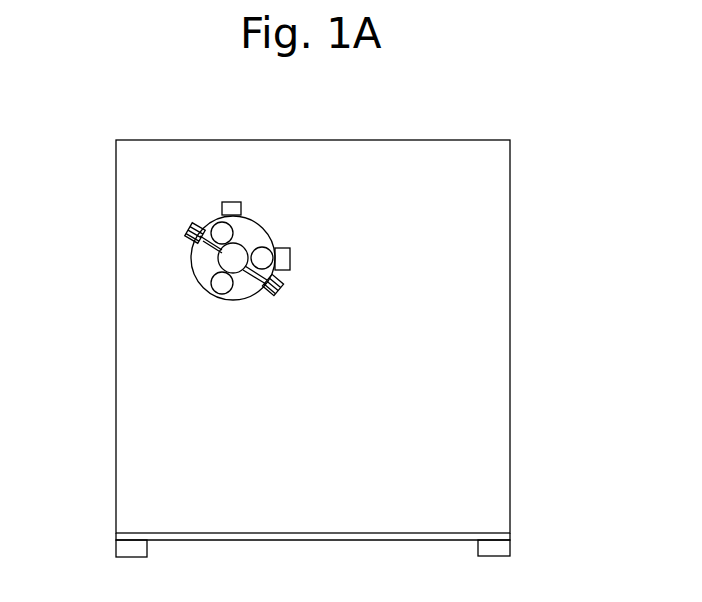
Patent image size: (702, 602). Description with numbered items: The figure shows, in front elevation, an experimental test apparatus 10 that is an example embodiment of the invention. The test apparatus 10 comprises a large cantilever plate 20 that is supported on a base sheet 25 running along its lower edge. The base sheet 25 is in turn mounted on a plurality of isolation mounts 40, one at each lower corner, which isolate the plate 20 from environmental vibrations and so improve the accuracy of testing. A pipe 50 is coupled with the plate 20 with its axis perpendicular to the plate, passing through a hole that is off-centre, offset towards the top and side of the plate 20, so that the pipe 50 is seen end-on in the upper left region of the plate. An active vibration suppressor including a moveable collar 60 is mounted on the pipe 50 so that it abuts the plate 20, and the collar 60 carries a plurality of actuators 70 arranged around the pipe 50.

The test apparatus 10 is at (88, 140).
The cantilever plate 20 is at (475, 412).
The base sheet 25 is at (322, 540).
The isolation mounts 40 is at (115, 545).
The pipe 50 is at (217, 260).
The moveable collar 60 is at (205, 270).
The actuators 70 is at (216, 223).